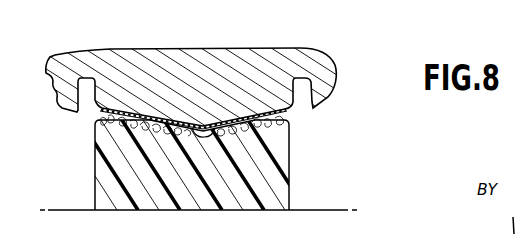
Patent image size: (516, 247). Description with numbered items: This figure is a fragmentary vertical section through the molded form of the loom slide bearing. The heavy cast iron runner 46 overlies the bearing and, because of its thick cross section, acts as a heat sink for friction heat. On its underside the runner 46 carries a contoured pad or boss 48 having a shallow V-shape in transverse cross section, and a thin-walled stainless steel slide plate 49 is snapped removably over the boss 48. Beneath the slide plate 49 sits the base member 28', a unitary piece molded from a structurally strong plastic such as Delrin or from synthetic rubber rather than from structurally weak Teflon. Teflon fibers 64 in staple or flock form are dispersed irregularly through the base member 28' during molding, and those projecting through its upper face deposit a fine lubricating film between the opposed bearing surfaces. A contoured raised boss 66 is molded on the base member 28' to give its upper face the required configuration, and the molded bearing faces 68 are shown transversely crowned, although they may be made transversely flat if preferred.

The runner 46 is at (237, 78).
The contoured pad or boss 48 is at (166, 118).
The slide plate 49 is at (143, 112).
The base member 28' is at (199, 160).
The Teflon fibers 64 is at (292, 130).
The contoured raised boss 66 is at (108, 134).
The molded bearing faces 68 is at (222, 128).